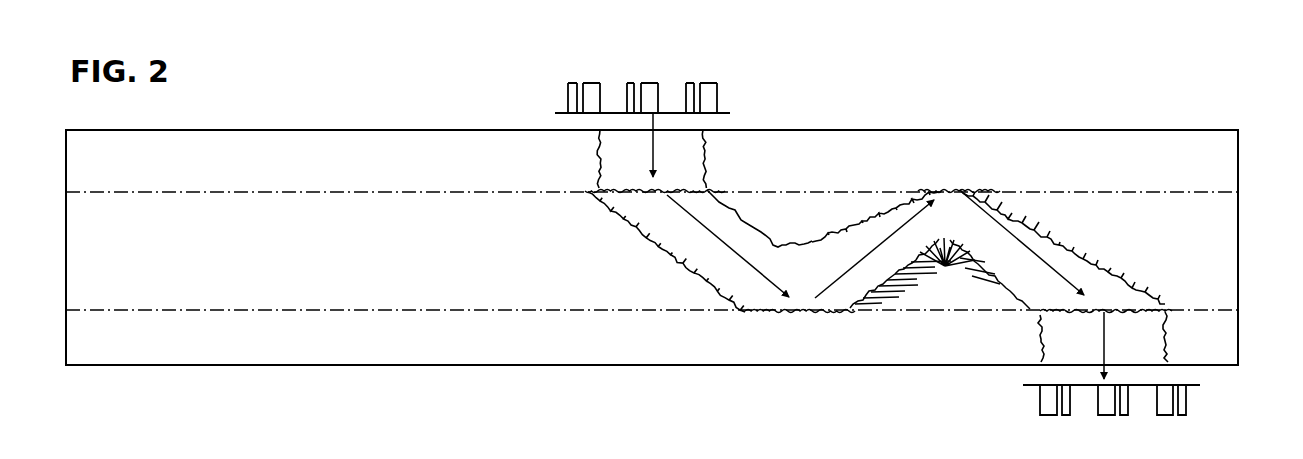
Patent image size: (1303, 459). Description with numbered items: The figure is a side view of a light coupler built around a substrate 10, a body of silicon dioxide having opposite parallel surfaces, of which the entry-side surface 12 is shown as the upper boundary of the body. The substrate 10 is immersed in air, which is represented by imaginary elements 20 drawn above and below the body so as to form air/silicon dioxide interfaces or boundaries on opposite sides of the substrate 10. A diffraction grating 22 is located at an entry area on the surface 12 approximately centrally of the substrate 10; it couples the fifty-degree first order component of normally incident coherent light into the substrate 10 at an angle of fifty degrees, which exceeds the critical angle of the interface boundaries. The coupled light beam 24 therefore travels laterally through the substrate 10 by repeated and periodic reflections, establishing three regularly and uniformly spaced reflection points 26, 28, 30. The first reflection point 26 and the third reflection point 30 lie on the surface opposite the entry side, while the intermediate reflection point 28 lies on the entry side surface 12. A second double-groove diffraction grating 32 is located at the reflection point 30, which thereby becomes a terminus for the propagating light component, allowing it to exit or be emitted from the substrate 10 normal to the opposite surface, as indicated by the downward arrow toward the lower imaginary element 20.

The substrate 10 is at (1238, 222).
The surface 12 is at (1094, 190).
The imaginary elements 20 is at (1238, 162).
The diffraction grating 22 is at (712, 183).
The acoustic wave beam propagating into substrate 24 is at (666, 252).
The reflection point 26 is at (813, 314).
The intermediate reflection point 28 is at (960, 187).
The reflection point 30 is at (1165, 300).
The second double-groove diffraction grating 32 is at (1065, 318).